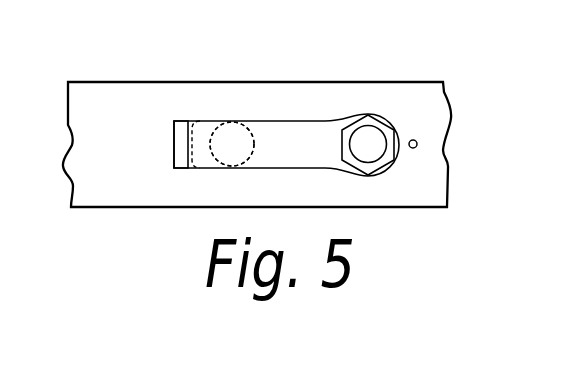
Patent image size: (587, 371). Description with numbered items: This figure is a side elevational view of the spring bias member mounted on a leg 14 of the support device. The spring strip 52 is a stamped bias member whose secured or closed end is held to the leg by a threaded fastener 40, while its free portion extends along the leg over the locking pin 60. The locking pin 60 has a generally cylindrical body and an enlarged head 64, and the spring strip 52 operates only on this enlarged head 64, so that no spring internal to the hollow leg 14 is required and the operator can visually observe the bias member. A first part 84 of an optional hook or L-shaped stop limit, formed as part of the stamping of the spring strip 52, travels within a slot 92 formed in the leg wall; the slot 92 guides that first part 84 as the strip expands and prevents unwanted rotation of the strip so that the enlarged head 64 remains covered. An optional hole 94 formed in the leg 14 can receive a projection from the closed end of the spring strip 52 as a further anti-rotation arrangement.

The leg 14 is at (93, 190).
The threaded fastener 40 is at (363, 145).
The spring strip 52 is at (297, 143).
The locking pin 60 is at (233, 127).
The enlarged head 64 is at (232, 144).
The first part of stop limit 84 is at (174, 142).
The slot 92 is at (198, 117).
The hole 94 is at (415, 148).